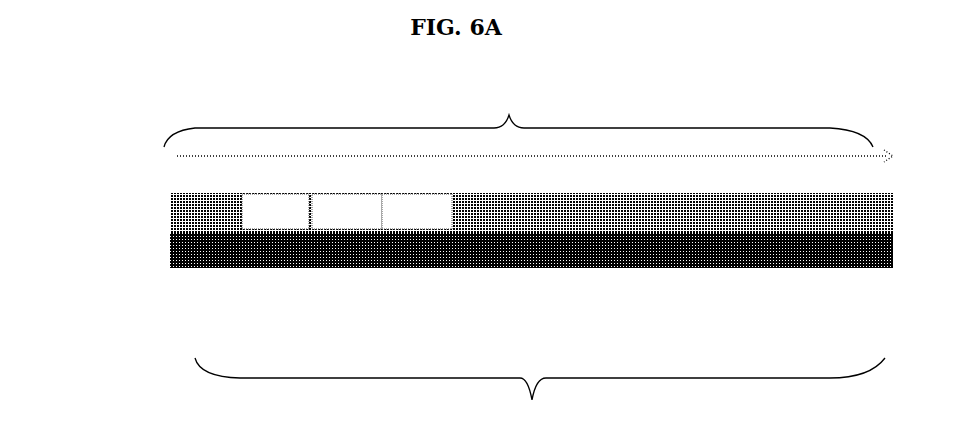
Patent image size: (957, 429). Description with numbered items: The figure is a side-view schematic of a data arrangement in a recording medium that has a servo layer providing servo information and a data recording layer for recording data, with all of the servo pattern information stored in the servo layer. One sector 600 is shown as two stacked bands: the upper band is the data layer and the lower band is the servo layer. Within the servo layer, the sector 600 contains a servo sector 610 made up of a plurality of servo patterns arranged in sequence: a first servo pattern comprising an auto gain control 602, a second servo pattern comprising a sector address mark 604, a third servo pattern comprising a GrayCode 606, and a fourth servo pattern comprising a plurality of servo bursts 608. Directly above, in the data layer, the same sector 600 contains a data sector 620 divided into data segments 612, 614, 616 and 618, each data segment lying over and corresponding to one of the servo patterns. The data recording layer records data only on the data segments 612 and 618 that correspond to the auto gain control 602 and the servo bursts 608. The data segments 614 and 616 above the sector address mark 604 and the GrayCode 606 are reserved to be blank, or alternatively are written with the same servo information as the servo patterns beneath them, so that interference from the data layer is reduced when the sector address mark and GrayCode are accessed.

The sector 600 is at (797, 71).
The auto gain control 602 is at (214, 268).
The sector address mark 604 is at (293, 268).
The GrayCode 606 is at (384, 268).
The servo bursts 608 is at (573, 268).
The servo sector 610 is at (540, 393).
The data segment 612 is at (221, 205).
The data segment 614 is at (273, 228).
The data segment 616 is at (418, 213).
The data segment 618 is at (595, 203).
The data sector 620 is at (528, 117).